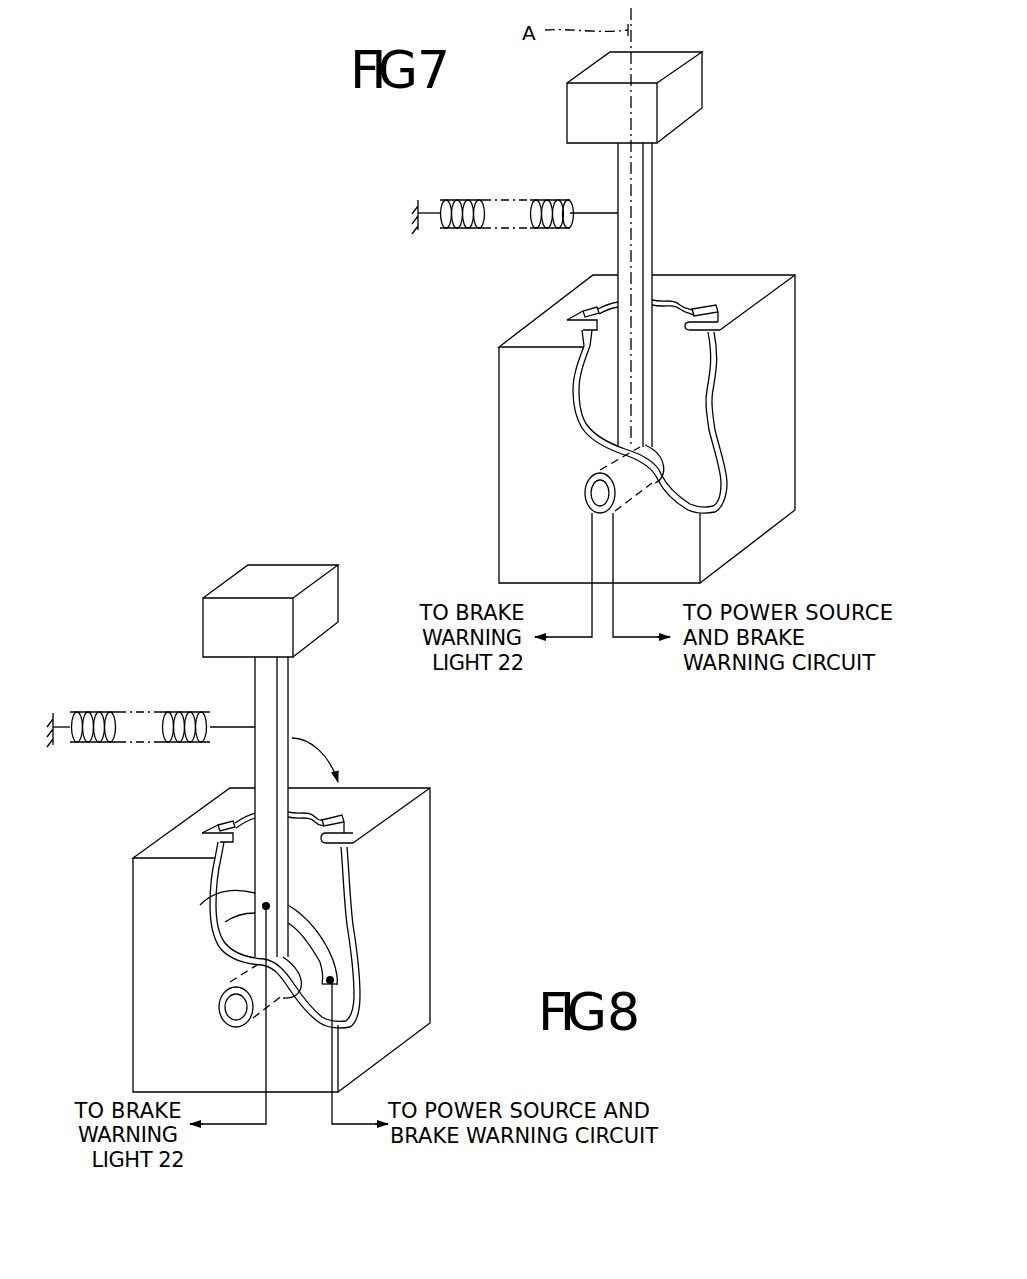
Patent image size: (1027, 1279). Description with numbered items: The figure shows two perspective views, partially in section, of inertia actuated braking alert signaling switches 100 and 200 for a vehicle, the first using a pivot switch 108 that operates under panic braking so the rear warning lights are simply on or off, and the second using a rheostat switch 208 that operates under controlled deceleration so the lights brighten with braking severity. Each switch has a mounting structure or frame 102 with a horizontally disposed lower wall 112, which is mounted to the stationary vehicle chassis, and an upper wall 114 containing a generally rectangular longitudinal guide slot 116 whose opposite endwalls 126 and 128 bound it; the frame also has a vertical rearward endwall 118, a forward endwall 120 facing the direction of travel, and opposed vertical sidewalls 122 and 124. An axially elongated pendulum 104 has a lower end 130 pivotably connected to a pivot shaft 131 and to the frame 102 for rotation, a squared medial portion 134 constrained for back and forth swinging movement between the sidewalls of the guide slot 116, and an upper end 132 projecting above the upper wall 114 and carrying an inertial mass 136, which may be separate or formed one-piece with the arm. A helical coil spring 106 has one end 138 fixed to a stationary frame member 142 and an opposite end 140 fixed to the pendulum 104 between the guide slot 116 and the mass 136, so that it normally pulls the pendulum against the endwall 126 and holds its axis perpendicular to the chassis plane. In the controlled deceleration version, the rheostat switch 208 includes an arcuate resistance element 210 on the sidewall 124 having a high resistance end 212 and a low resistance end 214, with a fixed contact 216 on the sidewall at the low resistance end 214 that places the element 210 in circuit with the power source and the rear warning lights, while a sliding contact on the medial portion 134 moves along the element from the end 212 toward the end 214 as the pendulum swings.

In FIG. 7, the inertia actuated signaling switch 100 is at (800, 196).
In FIG. 7, the mounting structure or frame 102 is at (497, 460).
In FIG. 8, the mounting structure or frame 102 is at (432, 912).
In FIG. 7, the elongated swing arm or pendulum 104 is at (706, 76).
In FIG. 7, the coil spring 106 is at (462, 204).
In FIG. 8, the coil spring 106 is at (227, 583).
In FIG. 7, the pivot switch 108 is at (581, 495).
In FIG. 8, the pivot switch 108 is at (260, 992).
In FIG. 7, the lower wall 112 is at (755, 545).
In FIG. 7, the upper wall 114 is at (708, 308).
In FIG. 7, the longitudinal guide slot 116 is at (701, 308).
In FIG. 7, the rearward endwall 118 is at (530, 320).
In FIG. 7, the forward endwall 120 is at (752, 515).
In FIG. 7, the vertical sidewall 122 is at (512, 372).
In FIG. 7, the vertical sidewall 124 is at (607, 276).
In FIG. 7, the guide slot endwall 126 is at (580, 312).
In FIG. 7, the guide slot endwall 128 is at (718, 308).
In FIG. 7, the pendulum lower end 130 is at (648, 432).
In FIG. 7, the pivot shaft 131 is at (600, 495).
In FIG. 7, the pendulum upper end 132 is at (648, 168).
In FIG. 7, the pendulum medial portion 134 is at (647, 272).
In FIG. 7, the inertial mass or weight 136 is at (567, 112).
In FIG. 7, the coil spring end 138 is at (427, 210).
In FIG. 7, the coil spring end 140 is at (597, 213).
In FIG. 7, the stationary frame member 142 is at (417, 224).
In FIG. 8, the inertia actuated signaling switch 200 is at (473, 828).
In FIG. 8, the rheostat switch 208 is at (333, 943).
In FIG. 8, the arcuate resistance element 210 is at (337, 966).
In FIG. 8, the high resistance end 212 is at (222, 914).
In FIG. 8, the low resistance end 214 is at (264, 908).
In FIG. 8, the fixed contact 216 is at (333, 981).